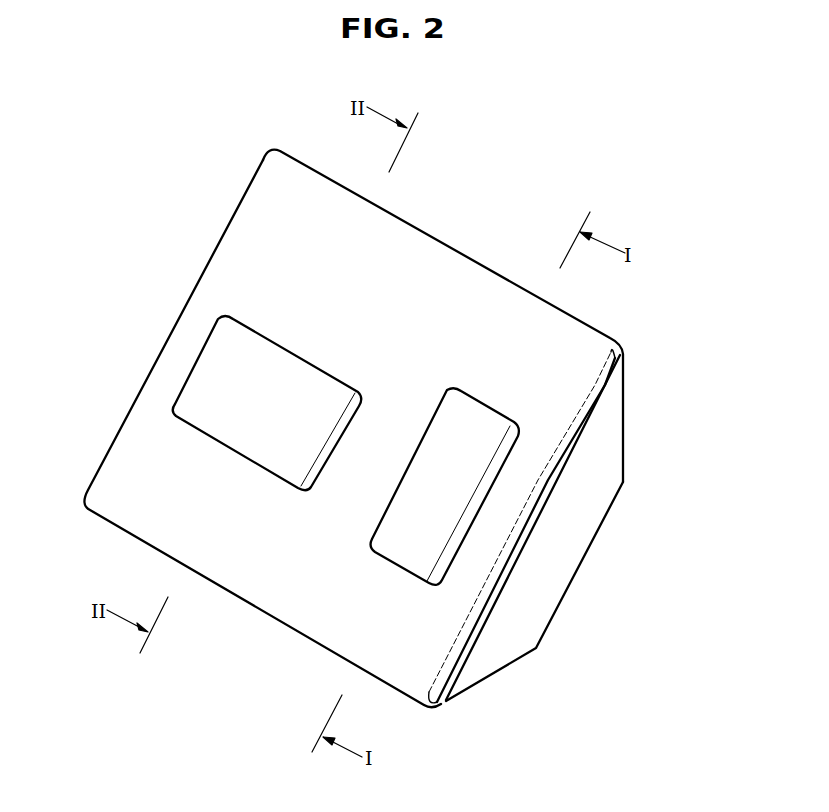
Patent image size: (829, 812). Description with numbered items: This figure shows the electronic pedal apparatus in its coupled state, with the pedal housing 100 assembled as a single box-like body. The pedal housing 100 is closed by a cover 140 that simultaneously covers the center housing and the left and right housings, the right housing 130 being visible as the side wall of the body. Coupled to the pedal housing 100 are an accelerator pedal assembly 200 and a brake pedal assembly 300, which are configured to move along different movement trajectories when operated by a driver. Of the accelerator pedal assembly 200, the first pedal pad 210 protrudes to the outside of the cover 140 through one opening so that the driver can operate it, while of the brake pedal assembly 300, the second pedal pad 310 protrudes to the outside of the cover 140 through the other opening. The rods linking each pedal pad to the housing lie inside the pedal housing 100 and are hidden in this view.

The pedal housing 100 is at (634, 410).
The right housing 130 is at (557, 550).
The cover 140 is at (462, 288).
The accelerator pedal assembly 200 is at (428, 542).
The first pedal pad 210 is at (463, 462).
The brake pedal assembly 300 is at (219, 397).
The second pedal pad 310 is at (235, 358).